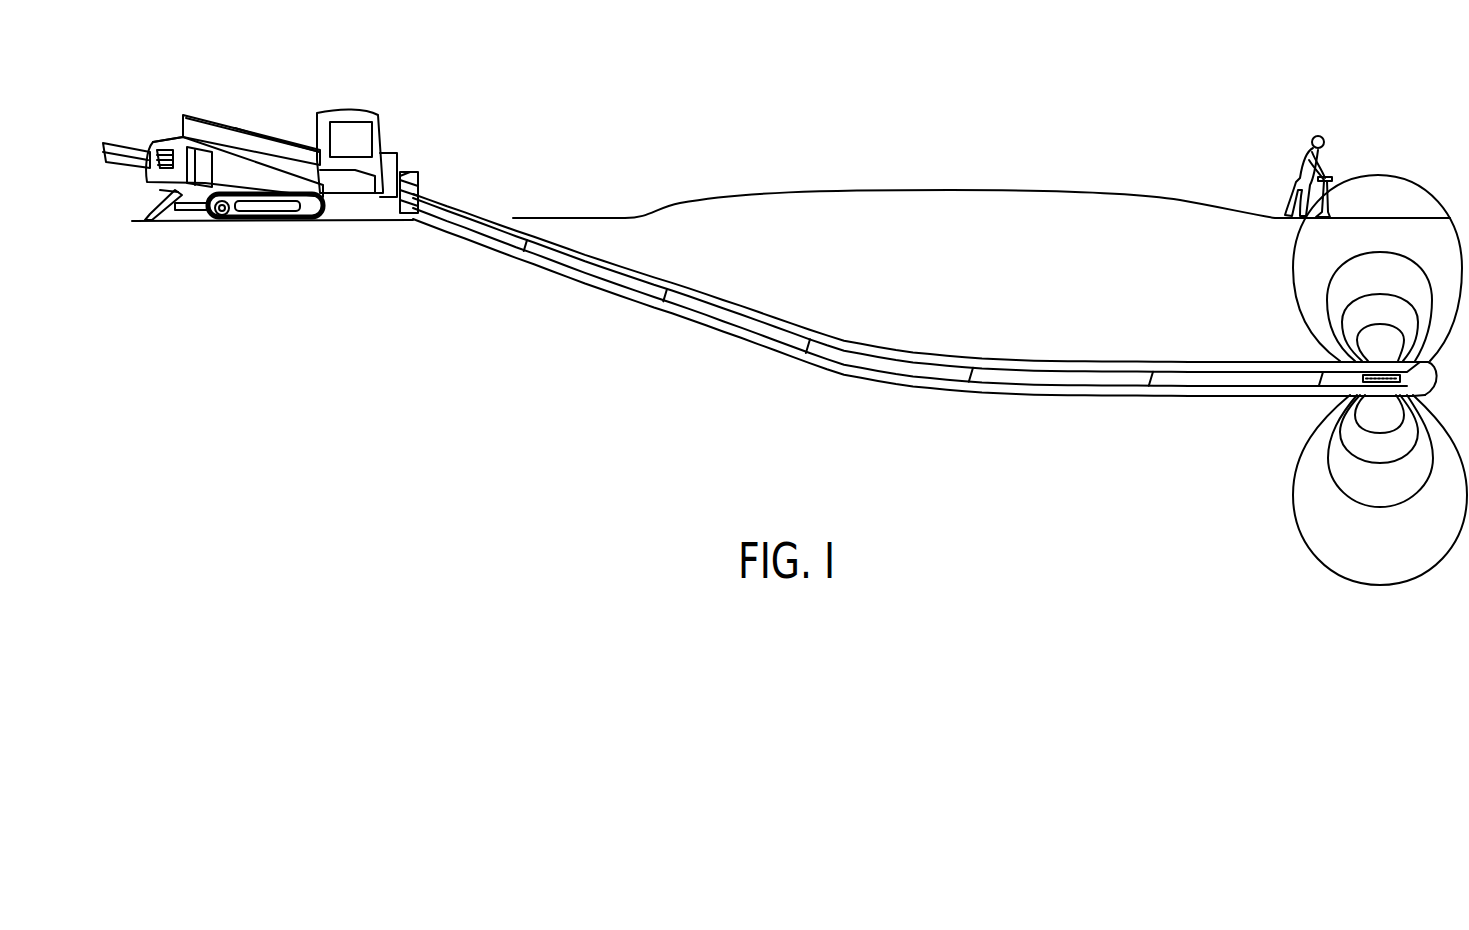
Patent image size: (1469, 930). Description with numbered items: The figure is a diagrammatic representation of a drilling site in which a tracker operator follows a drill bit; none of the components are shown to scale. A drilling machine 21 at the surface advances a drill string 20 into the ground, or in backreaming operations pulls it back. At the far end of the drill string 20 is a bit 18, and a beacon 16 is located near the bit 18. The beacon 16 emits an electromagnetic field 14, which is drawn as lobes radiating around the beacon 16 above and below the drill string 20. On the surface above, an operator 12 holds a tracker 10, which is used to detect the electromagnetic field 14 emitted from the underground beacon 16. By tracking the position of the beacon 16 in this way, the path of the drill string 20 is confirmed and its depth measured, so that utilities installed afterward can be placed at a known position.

The tracker 10 is at (1370, 172).
The operator 12 is at (1269, 159).
The electromagnetic field 14 is at (1326, 268).
The beacon 16 is at (1340, 485).
The bit 18 is at (1314, 430).
The drill string 20 is at (920, 273).
The drilling machine 21 is at (260, 137).